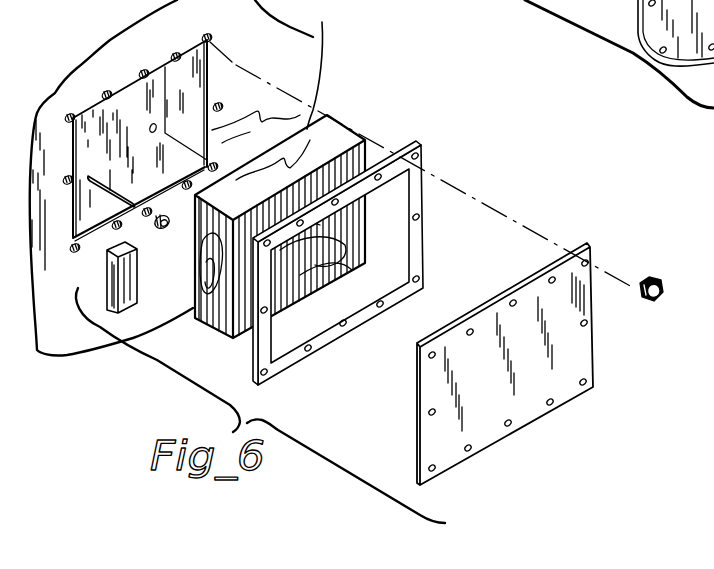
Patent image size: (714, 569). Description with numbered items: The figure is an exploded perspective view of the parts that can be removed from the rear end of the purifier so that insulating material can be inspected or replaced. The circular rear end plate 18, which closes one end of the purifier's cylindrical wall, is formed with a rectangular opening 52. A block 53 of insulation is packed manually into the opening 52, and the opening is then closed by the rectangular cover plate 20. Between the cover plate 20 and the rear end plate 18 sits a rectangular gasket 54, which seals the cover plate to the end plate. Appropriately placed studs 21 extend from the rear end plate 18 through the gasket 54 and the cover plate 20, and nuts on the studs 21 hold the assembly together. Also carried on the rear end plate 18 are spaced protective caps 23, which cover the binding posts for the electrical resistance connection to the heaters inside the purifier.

The rear end plate 18 is at (308, 62).
The rectangular cover plate 20 is at (580, 360).
The studs 21 is at (209, 35).
The protective caps 23 is at (116, 281).
The opening 52 is at (188, 100).
The block of insulation 53 is at (337, 129).
The rectangular gasket 54 is at (421, 243).